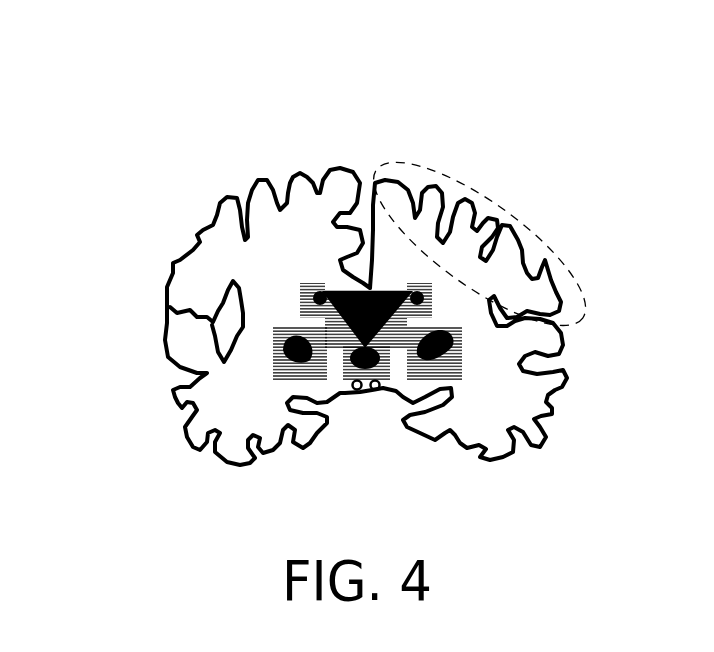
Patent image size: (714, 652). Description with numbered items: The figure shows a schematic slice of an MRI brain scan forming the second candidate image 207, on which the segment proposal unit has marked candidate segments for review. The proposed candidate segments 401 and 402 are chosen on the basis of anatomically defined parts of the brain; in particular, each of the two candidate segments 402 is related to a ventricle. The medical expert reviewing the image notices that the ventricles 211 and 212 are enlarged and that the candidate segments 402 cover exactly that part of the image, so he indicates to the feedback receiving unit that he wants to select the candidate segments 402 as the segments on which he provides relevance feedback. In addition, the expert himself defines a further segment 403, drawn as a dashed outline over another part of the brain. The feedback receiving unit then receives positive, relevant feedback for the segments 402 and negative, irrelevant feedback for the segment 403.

The second candidate image 207 is at (120, 101).
The ventricle 211 is at (353, 210).
The ventricle 212 is at (349, 446).
The candidate segments 401 is at (367, 331).
The candidate segments 402 is at (387, 313).
The segment 403 is at (479, 233).